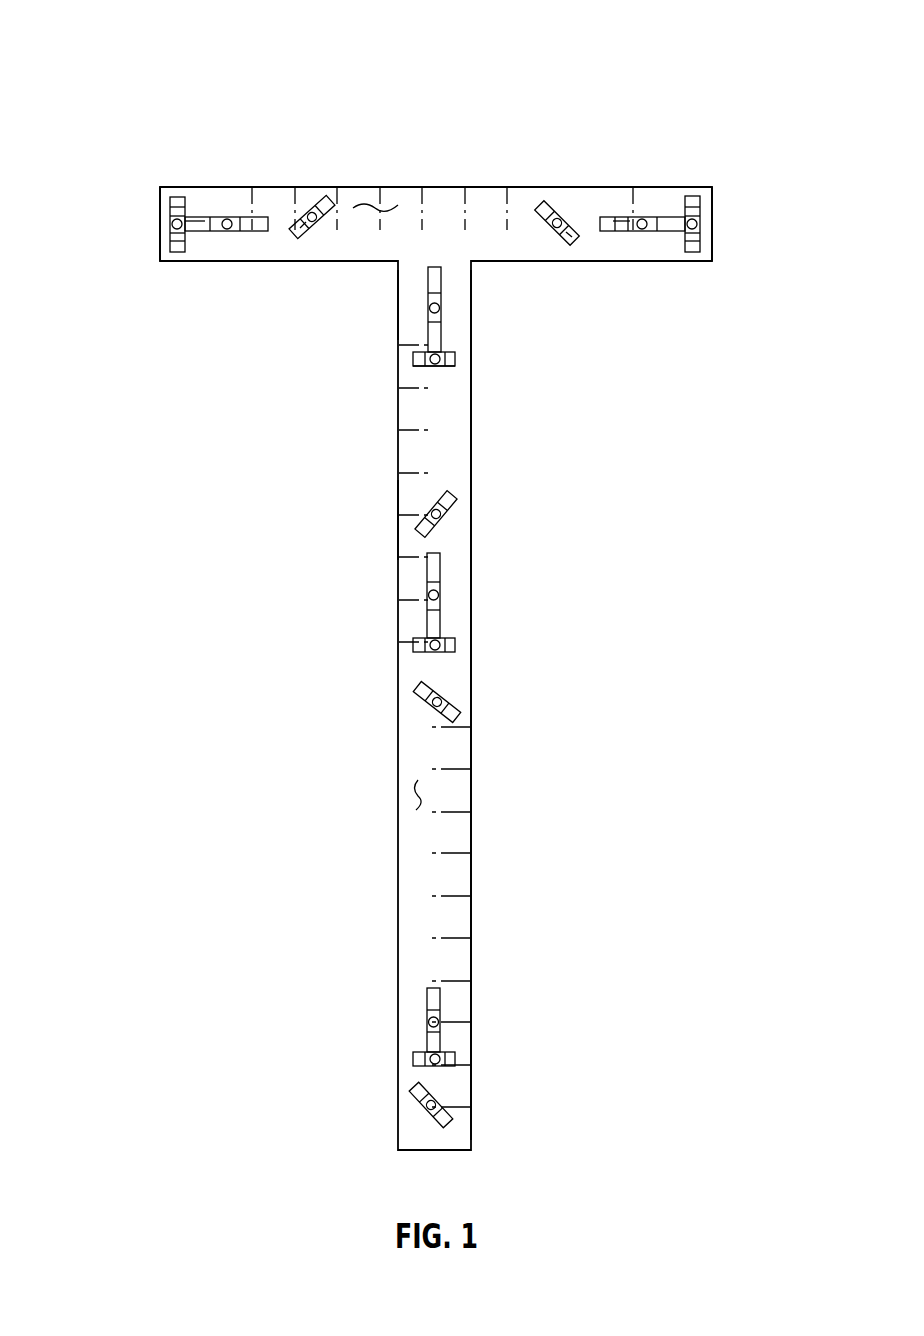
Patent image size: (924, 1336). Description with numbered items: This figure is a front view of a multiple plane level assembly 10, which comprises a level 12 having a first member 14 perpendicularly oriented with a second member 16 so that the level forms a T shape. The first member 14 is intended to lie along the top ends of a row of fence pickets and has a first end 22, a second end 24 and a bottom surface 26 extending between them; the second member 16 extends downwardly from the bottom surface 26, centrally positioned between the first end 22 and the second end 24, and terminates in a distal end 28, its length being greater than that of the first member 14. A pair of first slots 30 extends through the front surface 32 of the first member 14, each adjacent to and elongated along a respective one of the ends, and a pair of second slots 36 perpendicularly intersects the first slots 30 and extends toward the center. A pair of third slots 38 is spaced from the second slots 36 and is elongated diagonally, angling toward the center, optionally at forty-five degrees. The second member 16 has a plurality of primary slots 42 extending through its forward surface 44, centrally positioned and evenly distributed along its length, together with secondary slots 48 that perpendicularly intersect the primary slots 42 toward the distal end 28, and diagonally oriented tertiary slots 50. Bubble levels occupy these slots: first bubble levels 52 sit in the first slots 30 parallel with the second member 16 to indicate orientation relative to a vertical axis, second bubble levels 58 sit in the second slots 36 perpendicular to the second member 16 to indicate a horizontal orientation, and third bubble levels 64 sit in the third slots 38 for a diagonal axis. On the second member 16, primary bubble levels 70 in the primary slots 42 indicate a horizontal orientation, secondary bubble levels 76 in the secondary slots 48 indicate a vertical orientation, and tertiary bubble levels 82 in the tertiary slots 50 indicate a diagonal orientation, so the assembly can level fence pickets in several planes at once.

The multiple plane level assembly 10 is at (103, 40).
The level 12 is at (695, 157).
The first member 14 is at (242, 187).
The second member 16 is at (473, 540).
The first end 22 is at (160, 230).
The second end 24 is at (712, 205).
The bottom surface 26 is at (230, 262).
The distal end 28 is at (432, 1152).
The first slots 30 is at (177, 242).
The front surface 32 is at (365, 205).
The second slots 36 is at (205, 222).
The third slots 38 is at (331, 203).
The primary slots 42 is at (427, 280).
The forward surface 44 is at (410, 797).
The secondary slots 48 is at (456, 362).
The tertiary slots 50 is at (420, 530).
The first bubble levels 52 is at (172, 224).
The second bubble levels 58 is at (243, 232).
The third bubble levels 64 is at (300, 225).
The primary bubble levels 70 is at (435, 267).
The secondary bubble levels 76 is at (456, 356).
The tertiary bubble levels 82 is at (453, 498).